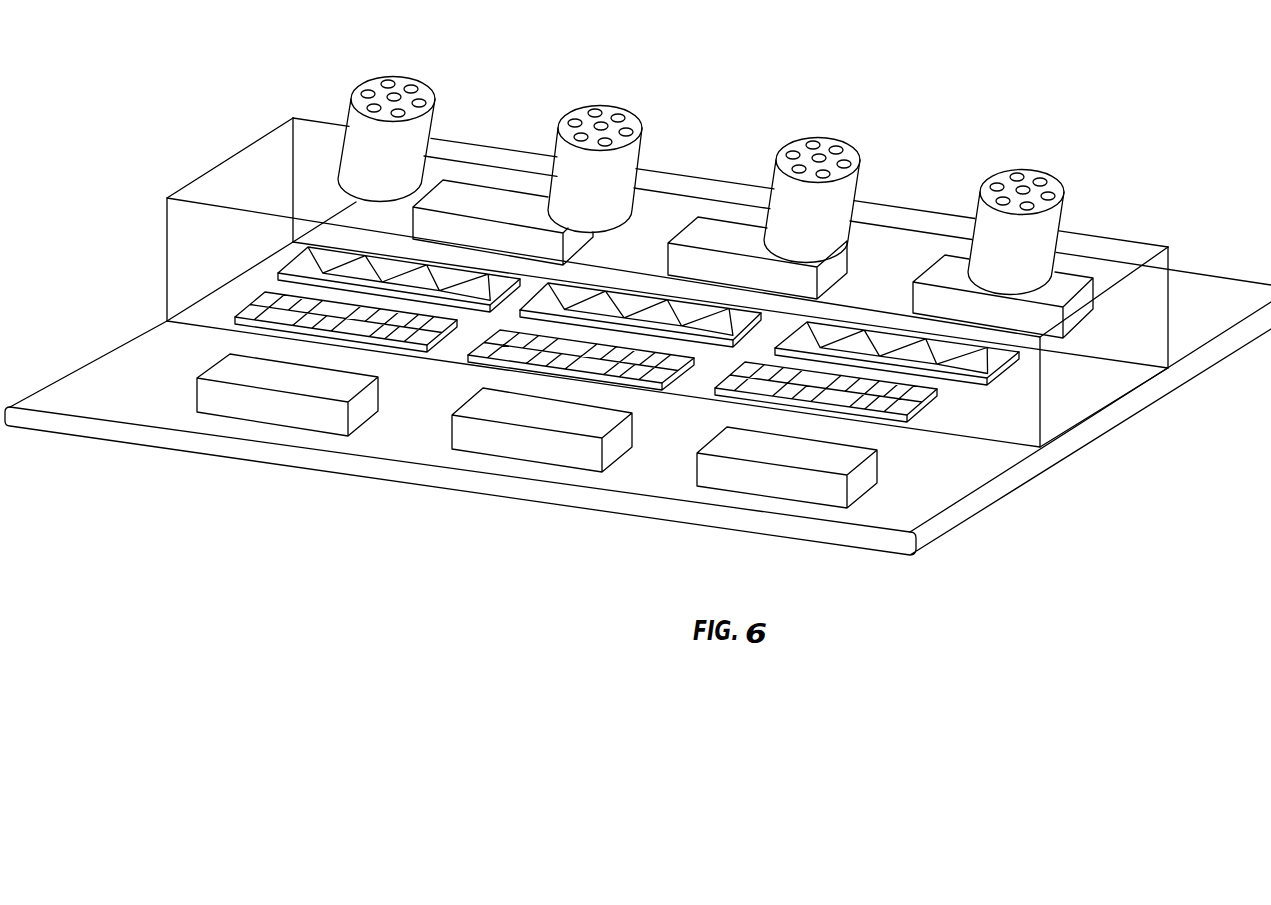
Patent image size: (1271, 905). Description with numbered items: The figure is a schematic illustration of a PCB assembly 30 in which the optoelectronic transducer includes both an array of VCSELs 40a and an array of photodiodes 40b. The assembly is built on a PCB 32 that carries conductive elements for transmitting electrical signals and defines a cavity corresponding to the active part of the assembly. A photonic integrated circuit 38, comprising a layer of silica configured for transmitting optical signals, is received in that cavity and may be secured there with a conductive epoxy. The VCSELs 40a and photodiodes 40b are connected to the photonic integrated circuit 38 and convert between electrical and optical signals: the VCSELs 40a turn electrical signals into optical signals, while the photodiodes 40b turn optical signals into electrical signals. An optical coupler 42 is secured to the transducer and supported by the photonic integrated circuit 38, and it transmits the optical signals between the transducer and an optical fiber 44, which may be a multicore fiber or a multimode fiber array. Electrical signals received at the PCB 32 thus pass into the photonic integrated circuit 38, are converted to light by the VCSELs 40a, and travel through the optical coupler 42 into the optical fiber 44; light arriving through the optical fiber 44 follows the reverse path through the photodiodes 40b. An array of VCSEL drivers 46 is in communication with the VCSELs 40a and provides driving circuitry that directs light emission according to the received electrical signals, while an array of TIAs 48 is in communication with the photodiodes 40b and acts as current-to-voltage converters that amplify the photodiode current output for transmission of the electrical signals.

The PCB assembly 30 is at (150, 161).
The PCB 32 is at (162, 414).
The photonic integrated circuit 38 is at (688, 396).
The array of VCSELs 40a is at (297, 250).
The array of photodiodes 40b is at (258, 305).
The optical coupler 42 is at (1154, 284).
The optical fiber 44 is at (986, 240).
The array of VCSEL drivers 46 is at (469, 193).
The array of TIAs 48 is at (345, 427).